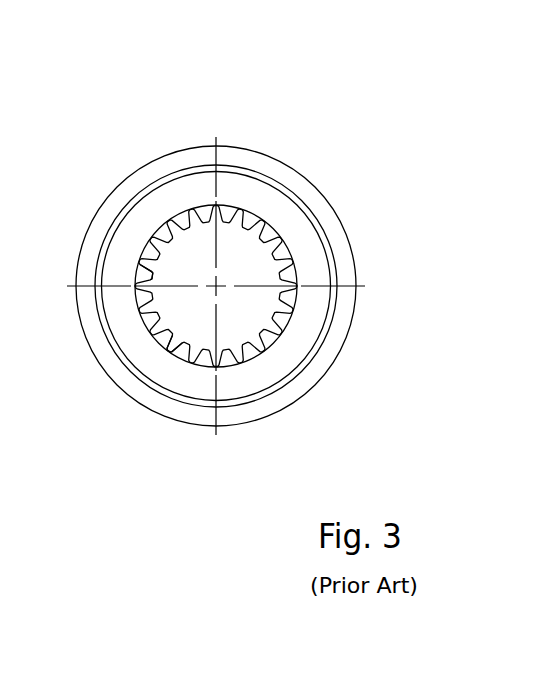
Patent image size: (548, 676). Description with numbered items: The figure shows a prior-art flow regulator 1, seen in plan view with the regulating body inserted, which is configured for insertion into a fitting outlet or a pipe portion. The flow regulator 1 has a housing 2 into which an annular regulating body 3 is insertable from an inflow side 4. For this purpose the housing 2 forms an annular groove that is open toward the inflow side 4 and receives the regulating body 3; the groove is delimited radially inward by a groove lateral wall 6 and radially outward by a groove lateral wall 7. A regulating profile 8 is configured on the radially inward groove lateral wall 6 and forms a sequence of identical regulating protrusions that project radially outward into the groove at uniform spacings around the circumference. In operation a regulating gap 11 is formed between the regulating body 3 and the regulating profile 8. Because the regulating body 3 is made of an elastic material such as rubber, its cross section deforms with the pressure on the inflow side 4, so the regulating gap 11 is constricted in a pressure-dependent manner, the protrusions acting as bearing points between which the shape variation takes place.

The flow regulator 1 is at (225, 237).
The housing 2 is at (225, 267).
The regulating body 3 is at (183, 197).
The inflow side 4 is at (267, 155).
The radially inward groove lateral wall 6 is at (268, 335).
The radially outward groove lateral wall 7 is at (98, 318).
The regulating profile 8 is at (142, 277).
The regulating gap 11 is at (183, 360).